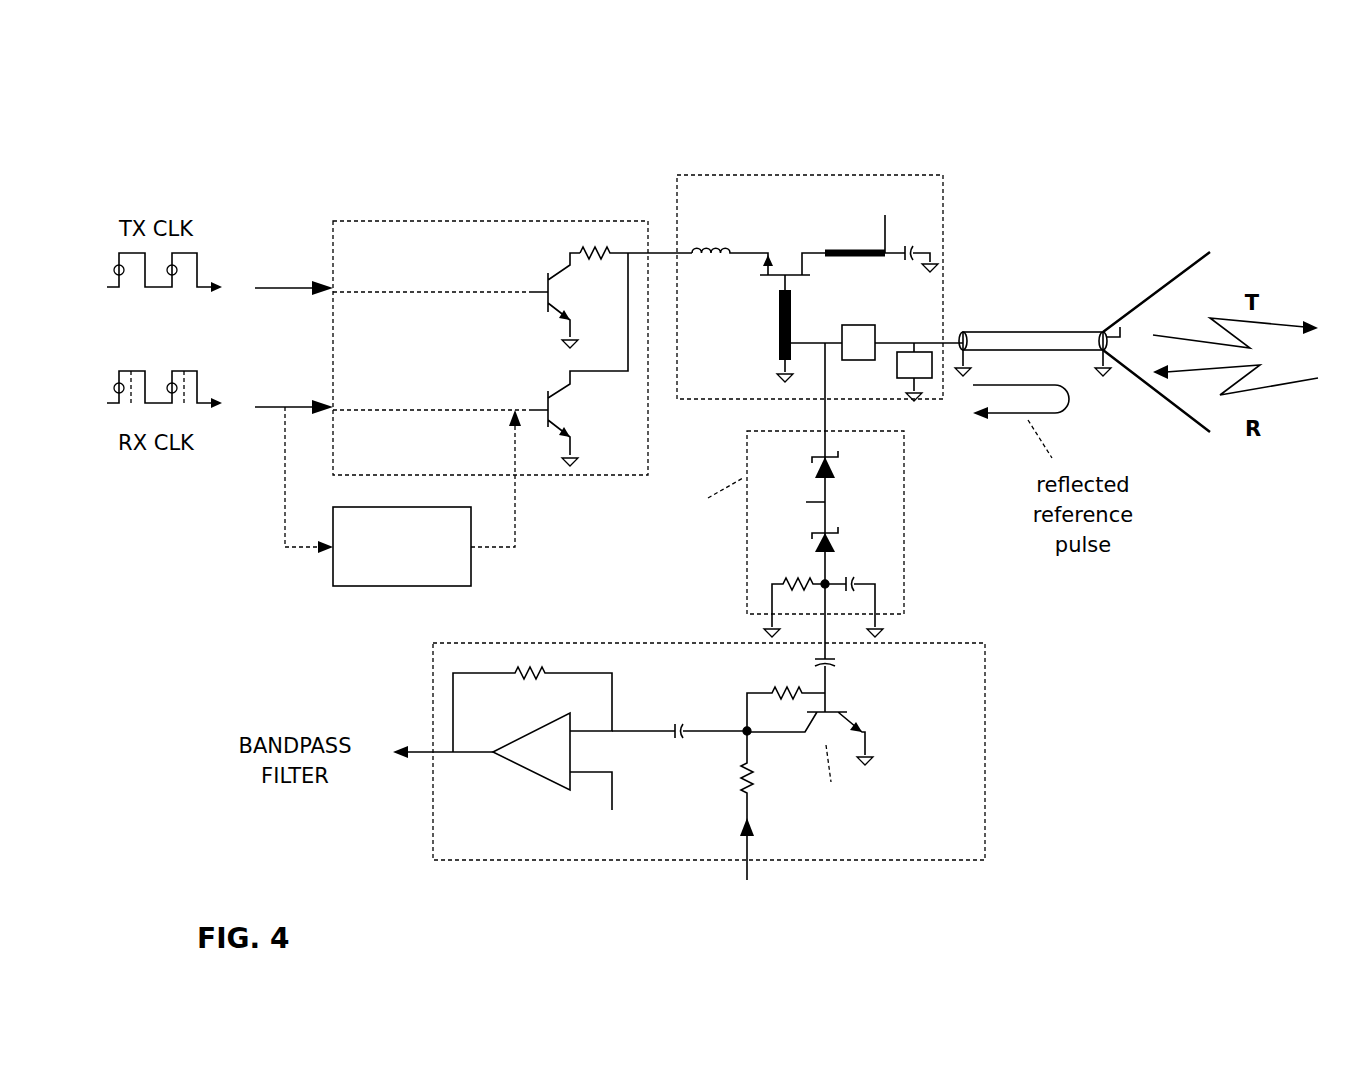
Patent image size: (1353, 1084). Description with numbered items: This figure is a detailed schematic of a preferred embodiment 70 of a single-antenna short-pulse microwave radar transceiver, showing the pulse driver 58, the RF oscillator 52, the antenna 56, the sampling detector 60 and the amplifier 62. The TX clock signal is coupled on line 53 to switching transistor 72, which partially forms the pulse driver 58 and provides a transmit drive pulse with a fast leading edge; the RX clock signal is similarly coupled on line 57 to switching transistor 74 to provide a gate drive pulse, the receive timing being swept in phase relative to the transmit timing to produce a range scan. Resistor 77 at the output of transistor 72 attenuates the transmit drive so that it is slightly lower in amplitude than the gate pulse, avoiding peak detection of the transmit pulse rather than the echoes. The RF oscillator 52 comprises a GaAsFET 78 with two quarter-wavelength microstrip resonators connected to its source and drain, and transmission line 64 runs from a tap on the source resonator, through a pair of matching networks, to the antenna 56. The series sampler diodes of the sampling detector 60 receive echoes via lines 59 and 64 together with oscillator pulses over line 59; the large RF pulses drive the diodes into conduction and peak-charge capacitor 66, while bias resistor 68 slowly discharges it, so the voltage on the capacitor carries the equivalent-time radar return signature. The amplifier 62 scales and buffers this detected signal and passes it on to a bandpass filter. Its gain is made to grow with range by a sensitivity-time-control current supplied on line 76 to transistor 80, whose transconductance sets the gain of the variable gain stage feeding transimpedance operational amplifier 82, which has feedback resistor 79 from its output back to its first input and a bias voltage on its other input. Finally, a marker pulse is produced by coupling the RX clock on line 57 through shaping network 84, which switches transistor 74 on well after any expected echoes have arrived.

The preferred embodiment 70 is at (255, 157).
The RF oscillator 52 is at (933, 175).
The line 53 is at (285, 297).
The antenna 56 is at (1168, 283).
The line 57 is at (285, 397).
The pulse driver 58 is at (614, 220).
The line 59 is at (825, 407).
The sampling detector 60 is at (903, 535).
The amplifier 62 is at (985, 742).
The transmission line 64 is at (1064, 332).
The capacitor 66 is at (863, 573).
The bias resistor 68 is at (795, 573).
The switching transistor 72 is at (560, 292).
The switching transistor 74 is at (560, 410).
The line 76 is at (745, 843).
The resistor 77 is at (594, 252).
The GaAsFET 78 is at (785, 255).
The feedback resistor 79 is at (545, 667).
The transistor 80 is at (837, 704).
The operational amplifier 82 is at (528, 770).
The shaping network 84 is at (413, 588).